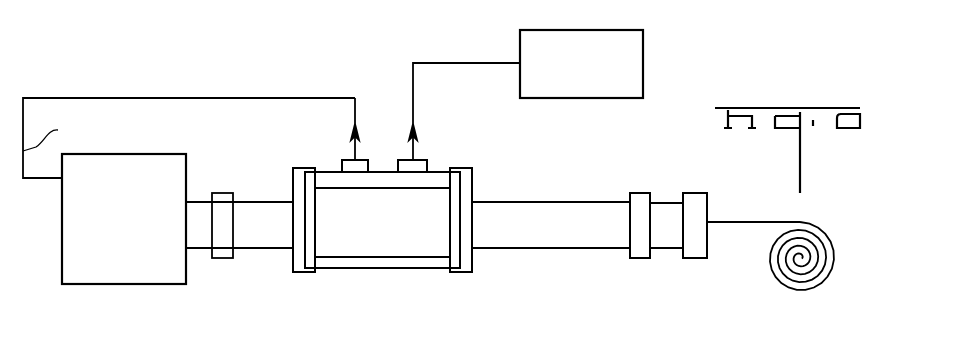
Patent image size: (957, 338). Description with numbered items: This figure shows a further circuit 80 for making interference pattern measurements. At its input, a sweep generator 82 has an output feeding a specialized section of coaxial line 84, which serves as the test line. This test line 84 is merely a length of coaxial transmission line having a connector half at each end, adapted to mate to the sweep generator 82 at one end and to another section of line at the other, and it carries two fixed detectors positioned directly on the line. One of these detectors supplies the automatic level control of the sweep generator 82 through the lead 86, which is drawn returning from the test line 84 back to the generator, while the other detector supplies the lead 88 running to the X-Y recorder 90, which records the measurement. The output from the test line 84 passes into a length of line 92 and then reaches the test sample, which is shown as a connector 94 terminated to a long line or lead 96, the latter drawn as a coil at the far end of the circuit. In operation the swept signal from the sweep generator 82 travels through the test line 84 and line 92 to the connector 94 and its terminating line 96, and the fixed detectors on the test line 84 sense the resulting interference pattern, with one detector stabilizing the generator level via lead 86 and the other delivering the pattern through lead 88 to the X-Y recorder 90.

The circuit 80 is at (521, 143).
The sweep generator 82 is at (148, 281).
The section of coaxial line 84 is at (361, 237).
The lead 86 is at (207, 98).
The lead 88 is at (413, 103).
The X-Y recorder 90 is at (643, 61).
The length of line 92 is at (532, 213).
The connector 94 is at (650, 198).
The long line 96 is at (775, 289).